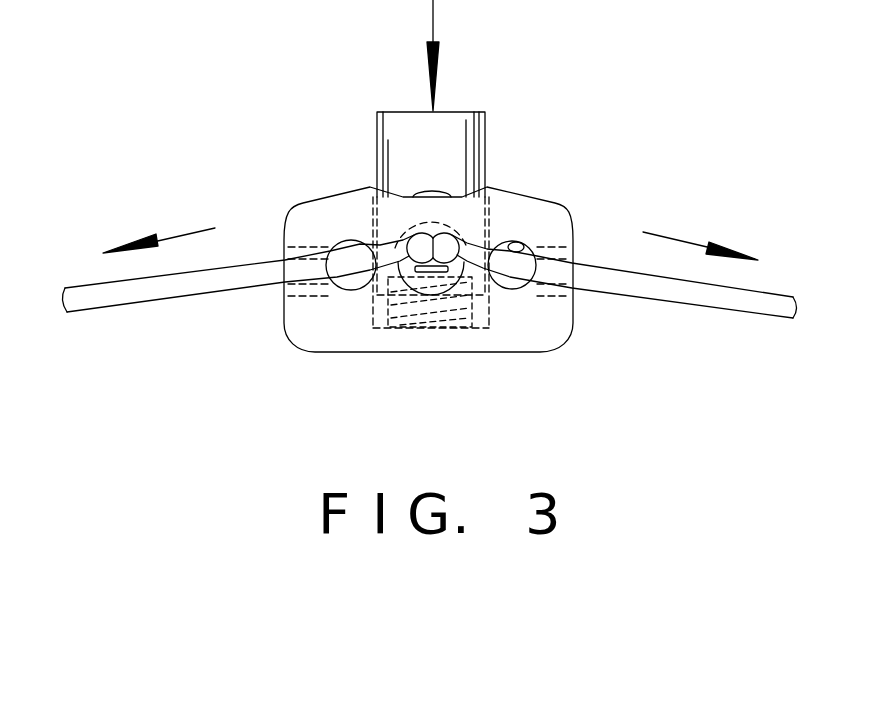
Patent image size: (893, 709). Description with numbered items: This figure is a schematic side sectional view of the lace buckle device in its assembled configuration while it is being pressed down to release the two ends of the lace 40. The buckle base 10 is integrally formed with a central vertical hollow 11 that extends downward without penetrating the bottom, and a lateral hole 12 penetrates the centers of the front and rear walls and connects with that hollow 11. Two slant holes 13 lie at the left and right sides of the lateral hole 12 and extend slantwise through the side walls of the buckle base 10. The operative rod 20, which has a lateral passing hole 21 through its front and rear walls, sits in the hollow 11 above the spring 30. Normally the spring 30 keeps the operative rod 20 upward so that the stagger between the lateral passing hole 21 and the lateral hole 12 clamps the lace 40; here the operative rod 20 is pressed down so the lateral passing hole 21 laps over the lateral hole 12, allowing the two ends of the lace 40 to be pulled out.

The buckle base 10 is at (555, 327).
The central vertical hollow 11 is at (380, 165).
The lateral hole 12 is at (445, 285).
The slant hole 13 is at (528, 245).
The operative rod 20 is at (465, 122).
The lateral passing hole 21 is at (443, 197).
The spring 30 is at (438, 313).
The lace 40 is at (757, 307).